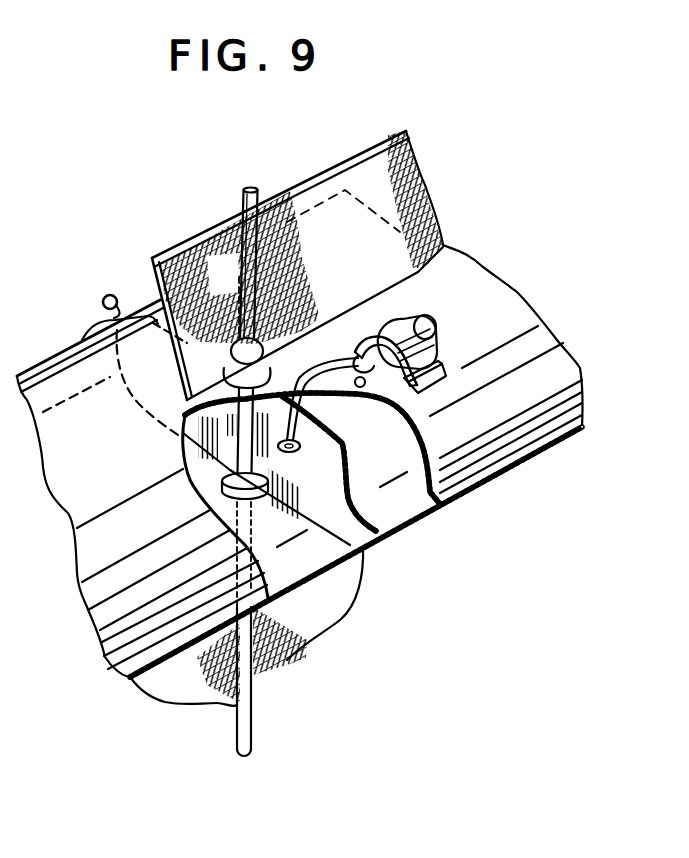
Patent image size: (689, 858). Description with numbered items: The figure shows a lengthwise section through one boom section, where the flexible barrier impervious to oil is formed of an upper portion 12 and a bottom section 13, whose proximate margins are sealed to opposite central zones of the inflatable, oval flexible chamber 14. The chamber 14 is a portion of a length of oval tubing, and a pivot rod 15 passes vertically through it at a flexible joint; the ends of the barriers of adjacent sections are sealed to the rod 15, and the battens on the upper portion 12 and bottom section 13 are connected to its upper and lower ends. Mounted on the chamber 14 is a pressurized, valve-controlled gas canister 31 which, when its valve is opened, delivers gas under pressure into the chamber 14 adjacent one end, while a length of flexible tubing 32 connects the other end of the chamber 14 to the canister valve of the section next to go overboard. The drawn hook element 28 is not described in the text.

The upper portion 12 is at (350, 244).
The bottom section 13 is at (297, 657).
The inflatable chamber 14 is at (480, 440).
The pivot rod 15 is at (257, 187).
The hook 28 is at (105, 294).
The gas canister 31 is at (458, 317).
The flexible tubing 32 is at (406, 302).